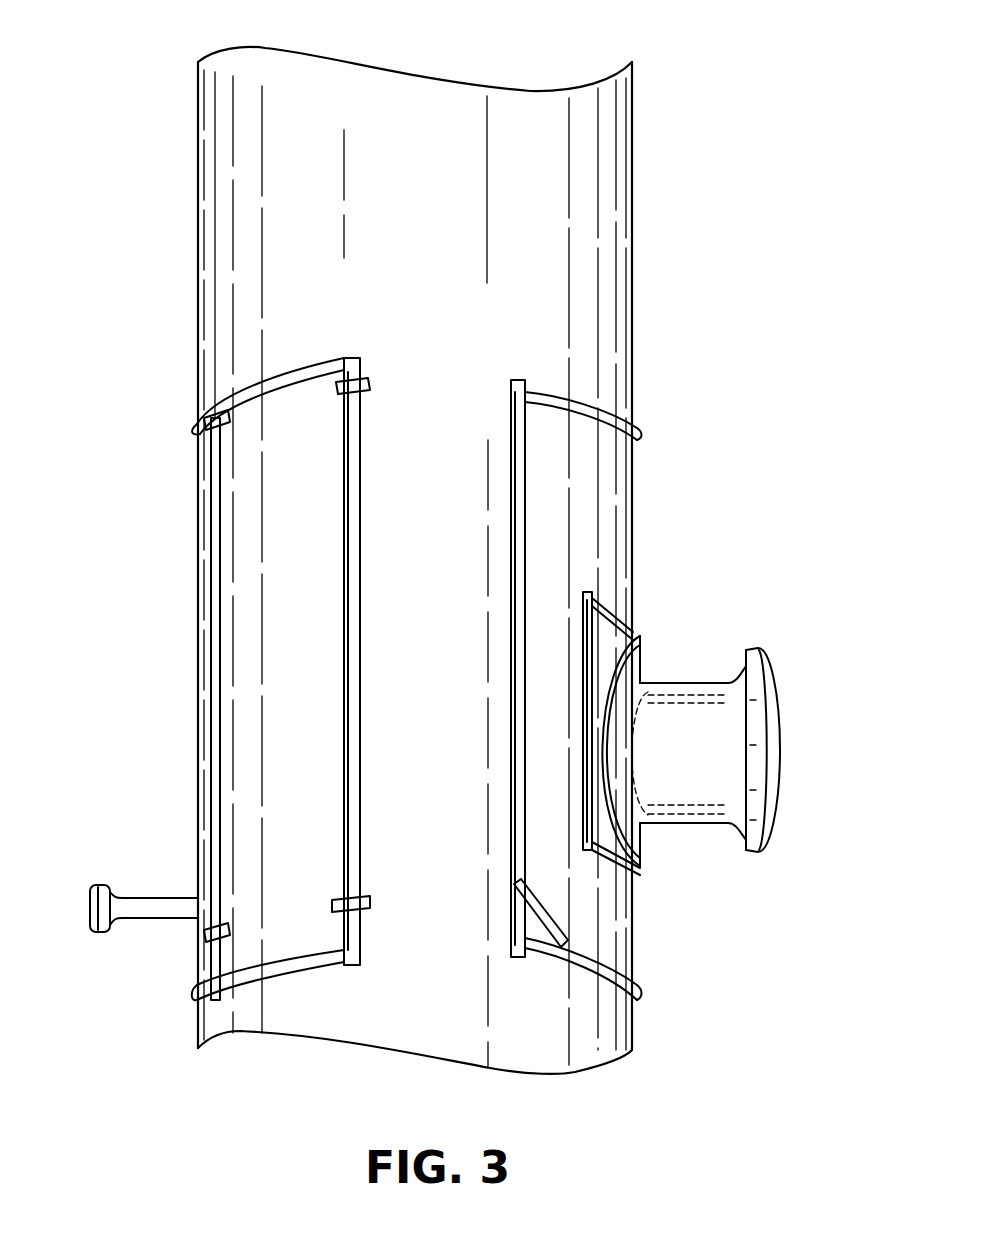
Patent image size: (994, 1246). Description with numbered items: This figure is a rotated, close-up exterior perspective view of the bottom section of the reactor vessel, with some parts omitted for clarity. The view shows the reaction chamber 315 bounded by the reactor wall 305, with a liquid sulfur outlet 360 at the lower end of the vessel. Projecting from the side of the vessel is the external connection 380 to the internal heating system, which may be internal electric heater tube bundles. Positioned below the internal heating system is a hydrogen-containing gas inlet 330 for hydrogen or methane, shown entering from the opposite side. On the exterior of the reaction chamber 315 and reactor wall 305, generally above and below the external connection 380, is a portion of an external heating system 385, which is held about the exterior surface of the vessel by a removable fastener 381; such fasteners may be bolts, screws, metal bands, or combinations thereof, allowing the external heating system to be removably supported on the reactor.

The reactor wall 305 is at (628, 102).
The reaction chamber 315 is at (283, 108).
The liquid sulfur outlet 360 is at (445, 1040).
The hydrogen-containing gas inlet 330 is at (86, 907).
The external connection to the internal heating system 380 is at (770, 745).
The removable fastener 381 is at (352, 918).
The external heating system 385 is at (512, 565).